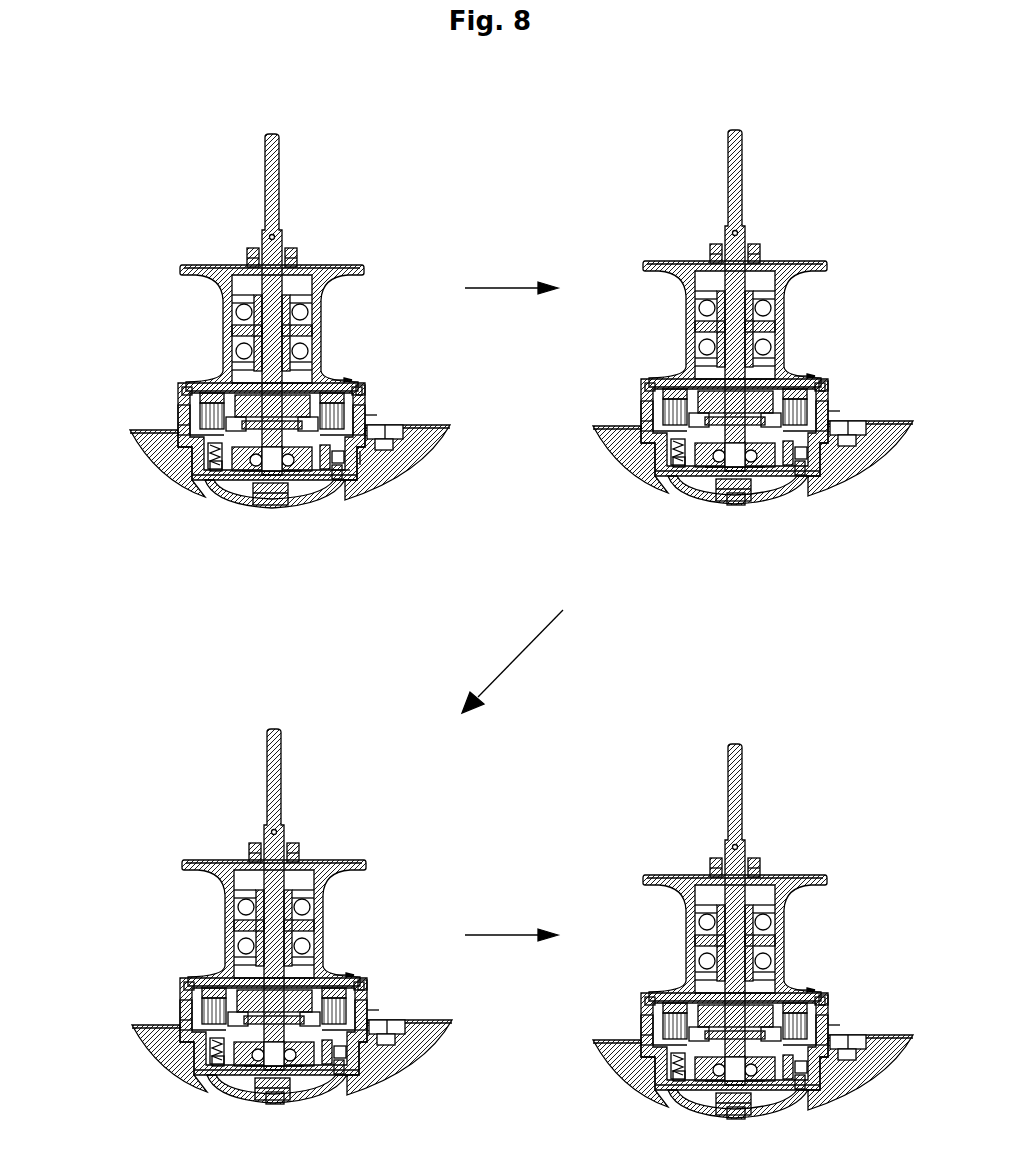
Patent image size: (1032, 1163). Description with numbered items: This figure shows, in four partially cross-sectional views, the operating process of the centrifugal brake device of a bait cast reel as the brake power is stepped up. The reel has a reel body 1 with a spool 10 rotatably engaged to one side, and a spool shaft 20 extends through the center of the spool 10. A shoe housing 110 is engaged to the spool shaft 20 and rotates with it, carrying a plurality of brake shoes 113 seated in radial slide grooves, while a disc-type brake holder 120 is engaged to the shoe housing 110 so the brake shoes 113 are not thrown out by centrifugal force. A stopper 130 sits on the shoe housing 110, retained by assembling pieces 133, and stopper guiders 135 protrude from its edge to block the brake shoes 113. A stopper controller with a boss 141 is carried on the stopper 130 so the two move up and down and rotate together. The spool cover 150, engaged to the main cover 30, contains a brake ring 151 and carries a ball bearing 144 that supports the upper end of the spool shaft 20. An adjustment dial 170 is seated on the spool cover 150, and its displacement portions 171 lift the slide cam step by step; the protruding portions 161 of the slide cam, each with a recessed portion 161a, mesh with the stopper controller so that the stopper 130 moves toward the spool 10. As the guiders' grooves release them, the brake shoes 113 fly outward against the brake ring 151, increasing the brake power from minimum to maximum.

The reel body 1 is at (136, 176).
The spool 10 is at (477, 702).
The spool shaft 20 is at (473, 607).
The main cover 30 is at (495, 765).
The shoe housing 110 is at (477, 743).
The brake shoes 113 is at (463, 701).
The brake holder 120 is at (455, 723).
The stopper 130 is at (625, 715).
The assembling pieces 133 is at (631, 686).
The stopper guiders 135 is at (475, 631).
The boss 141 is at (411, 477).
The ball bearing 144 is at (416, 786).
The spool cover 150 is at (350, 739).
The brake ring 151 is at (602, 667).
The protruding portions 161 is at (529, 818).
The recessed portion 161a is at (402, 500).
The adjustment dial 170 is at (470, 815).
The displacement portions 171 is at (593, 795).